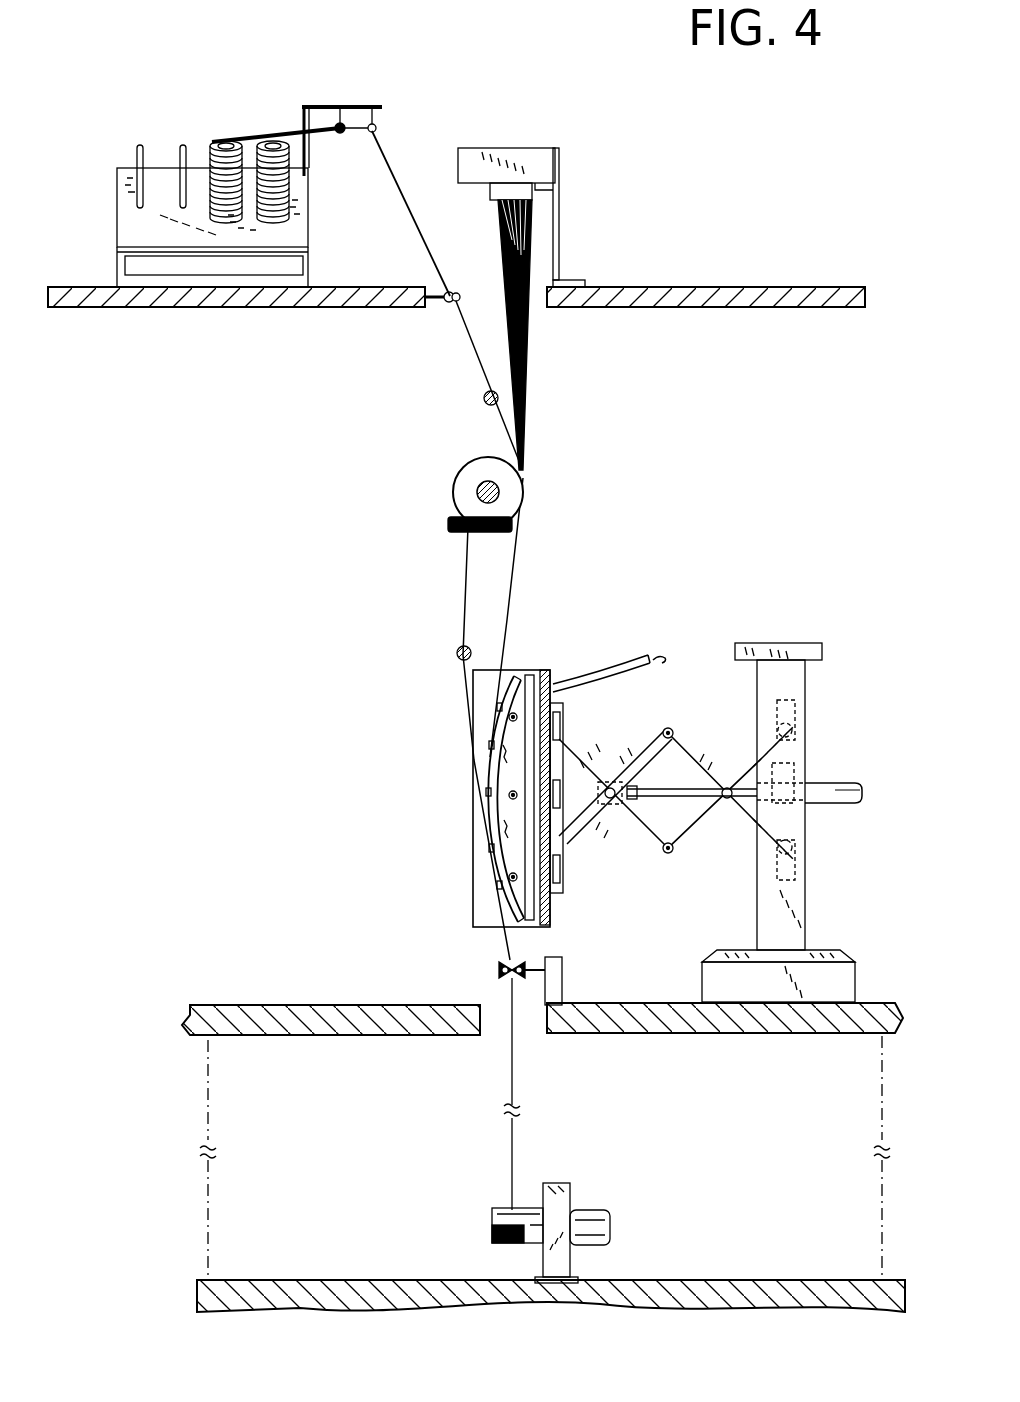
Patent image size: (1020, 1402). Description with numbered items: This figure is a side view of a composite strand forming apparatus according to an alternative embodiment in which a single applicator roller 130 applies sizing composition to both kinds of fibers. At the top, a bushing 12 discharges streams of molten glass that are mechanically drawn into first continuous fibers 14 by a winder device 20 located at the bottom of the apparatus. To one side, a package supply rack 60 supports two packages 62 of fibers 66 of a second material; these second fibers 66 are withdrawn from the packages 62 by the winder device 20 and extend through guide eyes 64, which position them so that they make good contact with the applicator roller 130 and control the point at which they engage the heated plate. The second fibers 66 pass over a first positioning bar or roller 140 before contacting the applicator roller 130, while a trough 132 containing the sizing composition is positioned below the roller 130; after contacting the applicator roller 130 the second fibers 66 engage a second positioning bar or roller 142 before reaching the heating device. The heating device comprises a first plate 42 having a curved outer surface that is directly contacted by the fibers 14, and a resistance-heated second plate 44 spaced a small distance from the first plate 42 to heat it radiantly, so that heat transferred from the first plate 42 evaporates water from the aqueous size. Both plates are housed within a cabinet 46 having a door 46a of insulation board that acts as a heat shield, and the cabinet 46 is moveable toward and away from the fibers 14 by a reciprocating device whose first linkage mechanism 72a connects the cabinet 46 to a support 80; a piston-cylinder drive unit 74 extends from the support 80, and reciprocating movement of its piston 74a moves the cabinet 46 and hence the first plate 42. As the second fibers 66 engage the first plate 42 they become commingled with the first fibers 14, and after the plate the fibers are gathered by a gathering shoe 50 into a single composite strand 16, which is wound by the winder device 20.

The bushing 12 is at (521, 153).
The first continuous fibers 14 is at (512, 578).
The composite strand 16 is at (512, 1068).
The winder device 20 is at (476, 1219).
The first plate 42 is at (486, 757).
The second plate 44 is at (537, 670).
The cabinet 46 is at (557, 907).
The first door 46a is at (473, 905).
The gathering shoe 50 is at (498, 970).
The package supply rack 60 is at (156, 168).
The packages 62 is at (268, 141).
The guide eyes 64 is at (342, 110).
The second fibers 66 is at (406, 203).
The first linkage mechanism 72a is at (622, 757).
The piston-cylinder drive unit 74 is at (832, 803).
The piston 74a is at (688, 798).
The support 80 is at (805, 897).
The applicator roller 130 is at (454, 478).
The trough 132 is at (448, 522).
The first positioning bar 140 is at (484, 402).
The second positioning bar 142 is at (460, 648).